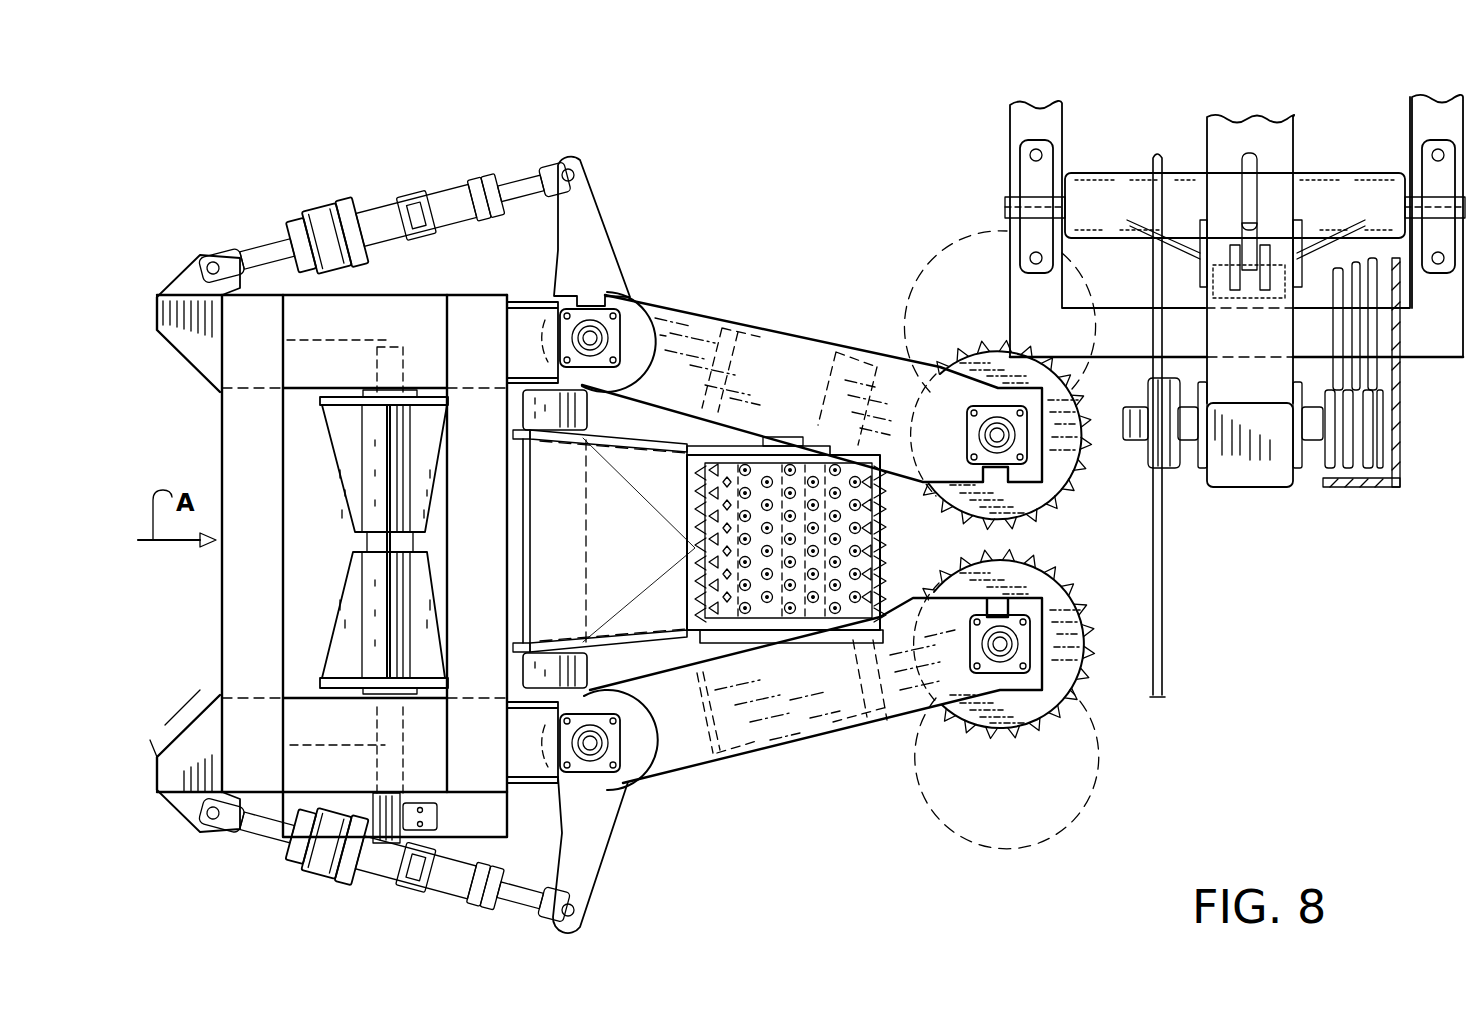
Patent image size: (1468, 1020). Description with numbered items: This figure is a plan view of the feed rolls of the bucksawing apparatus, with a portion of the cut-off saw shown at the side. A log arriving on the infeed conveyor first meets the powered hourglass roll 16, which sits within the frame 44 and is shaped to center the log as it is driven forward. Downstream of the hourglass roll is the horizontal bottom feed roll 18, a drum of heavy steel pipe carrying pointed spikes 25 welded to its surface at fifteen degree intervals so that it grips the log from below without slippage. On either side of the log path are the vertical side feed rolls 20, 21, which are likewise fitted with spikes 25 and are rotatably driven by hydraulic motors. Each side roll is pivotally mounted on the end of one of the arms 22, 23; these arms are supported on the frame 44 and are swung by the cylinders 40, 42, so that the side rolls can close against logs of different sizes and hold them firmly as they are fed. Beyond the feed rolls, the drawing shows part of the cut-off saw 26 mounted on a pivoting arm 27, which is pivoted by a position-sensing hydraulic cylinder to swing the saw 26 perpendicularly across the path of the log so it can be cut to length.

The powered hourglass roll 16 is at (340, 587).
The horizontal bottom feed roll 18 is at (806, 470).
The vertical side feed roll 20 is at (960, 347).
The vertical side feed roll 21 is at (1012, 742).
The arm 22 is at (768, 333).
The arm 23 is at (785, 718).
The spikes 25 is at (1045, 528).
The cut-off saw 26 is at (1170, 541).
The pivoting arm 27 is at (1243, 488).
The cylinder 40 is at (447, 895).
The cylinder 42 is at (458, 185).
The frame 44 is at (473, 290).